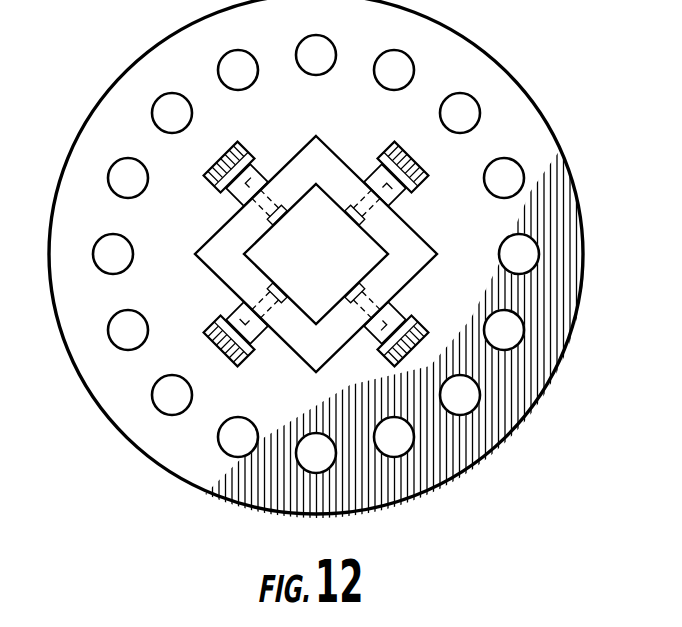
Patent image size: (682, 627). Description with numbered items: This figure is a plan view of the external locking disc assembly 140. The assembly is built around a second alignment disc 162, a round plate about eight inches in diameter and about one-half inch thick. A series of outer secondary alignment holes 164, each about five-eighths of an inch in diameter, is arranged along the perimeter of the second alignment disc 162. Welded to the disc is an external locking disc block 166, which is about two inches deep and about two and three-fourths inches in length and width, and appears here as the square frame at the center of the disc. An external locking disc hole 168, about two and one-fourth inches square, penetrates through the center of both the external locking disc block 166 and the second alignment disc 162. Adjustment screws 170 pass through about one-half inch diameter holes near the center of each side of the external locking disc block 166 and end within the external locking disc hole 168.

The external locking disc assembly 140 is at (529, 422).
The second alignment disc 162 is at (582, 215).
The outer secondary alignment holes 164 is at (168, 94).
The external locking disc block 166 is at (338, 153).
The external locking disc hole 168 is at (333, 272).
The adjustment screws 170 is at (213, 157).